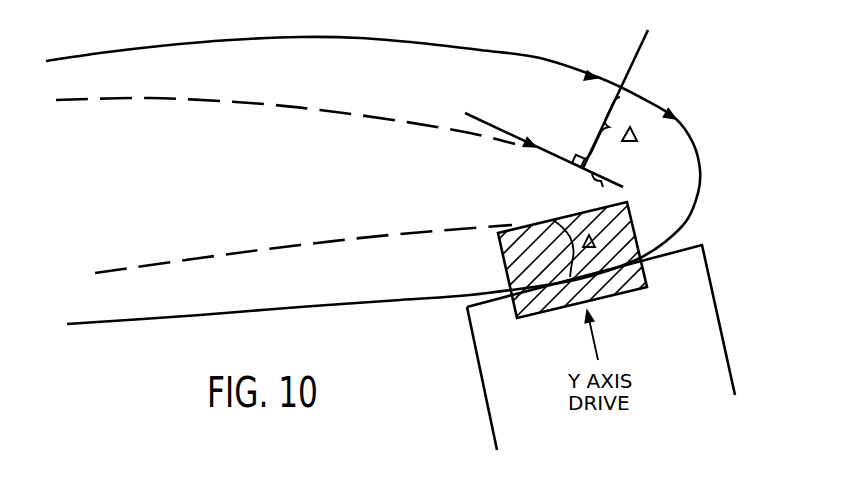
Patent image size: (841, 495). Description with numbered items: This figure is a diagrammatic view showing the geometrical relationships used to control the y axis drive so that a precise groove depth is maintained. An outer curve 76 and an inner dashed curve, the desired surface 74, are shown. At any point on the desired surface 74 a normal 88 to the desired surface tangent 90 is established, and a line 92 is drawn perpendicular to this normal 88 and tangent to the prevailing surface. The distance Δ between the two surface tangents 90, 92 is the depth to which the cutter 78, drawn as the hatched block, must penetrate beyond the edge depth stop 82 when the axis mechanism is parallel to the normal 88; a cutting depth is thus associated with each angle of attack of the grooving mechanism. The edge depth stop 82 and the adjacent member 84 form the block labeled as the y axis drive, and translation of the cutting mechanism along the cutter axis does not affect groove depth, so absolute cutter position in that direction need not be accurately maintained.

The desired surface 74 is at (340, 118).
The outer path 76 is at (515, 55).
The cutter 78 is at (555, 220).
The edge depth stop 82 is at (699, 247).
The Y axis drive carriage 84 is at (479, 371).
The normal 88 is at (610, 103).
The desired surface tangent 90 is at (519, 123).
The line perpendicular to the normal 92 is at (592, 68).